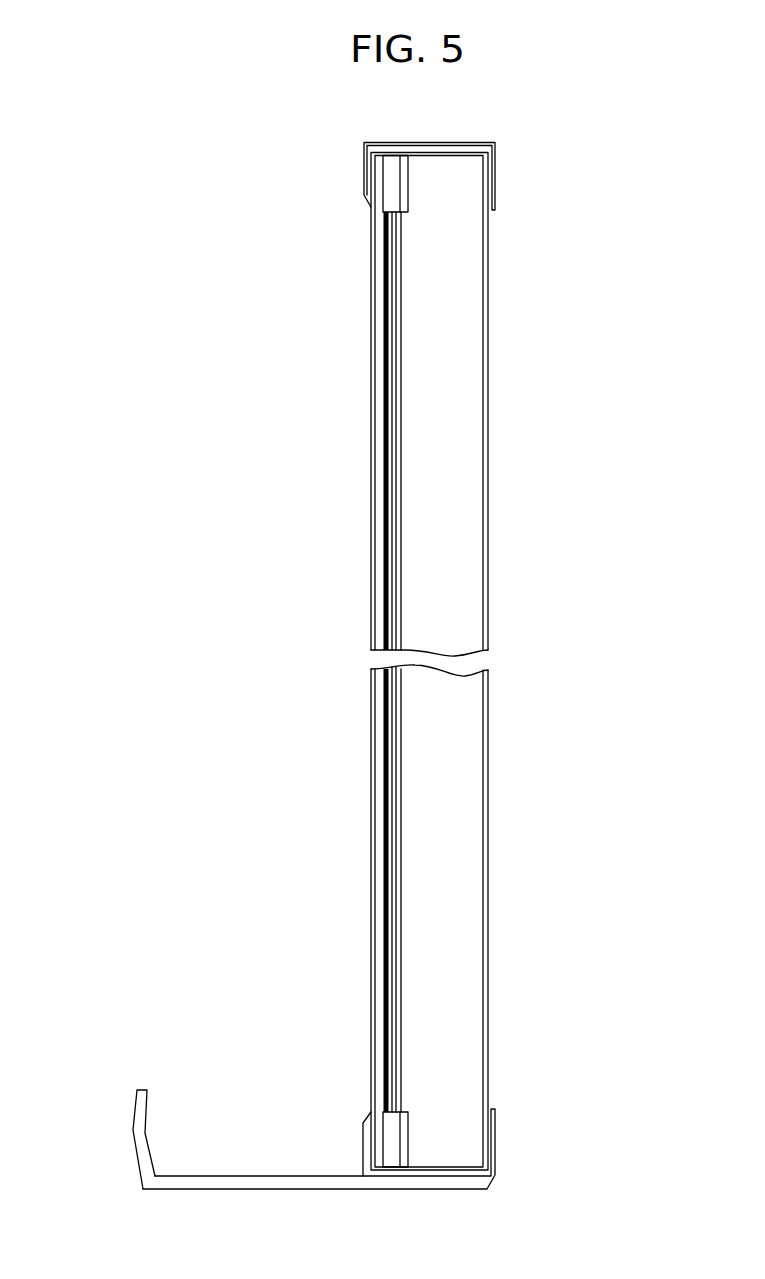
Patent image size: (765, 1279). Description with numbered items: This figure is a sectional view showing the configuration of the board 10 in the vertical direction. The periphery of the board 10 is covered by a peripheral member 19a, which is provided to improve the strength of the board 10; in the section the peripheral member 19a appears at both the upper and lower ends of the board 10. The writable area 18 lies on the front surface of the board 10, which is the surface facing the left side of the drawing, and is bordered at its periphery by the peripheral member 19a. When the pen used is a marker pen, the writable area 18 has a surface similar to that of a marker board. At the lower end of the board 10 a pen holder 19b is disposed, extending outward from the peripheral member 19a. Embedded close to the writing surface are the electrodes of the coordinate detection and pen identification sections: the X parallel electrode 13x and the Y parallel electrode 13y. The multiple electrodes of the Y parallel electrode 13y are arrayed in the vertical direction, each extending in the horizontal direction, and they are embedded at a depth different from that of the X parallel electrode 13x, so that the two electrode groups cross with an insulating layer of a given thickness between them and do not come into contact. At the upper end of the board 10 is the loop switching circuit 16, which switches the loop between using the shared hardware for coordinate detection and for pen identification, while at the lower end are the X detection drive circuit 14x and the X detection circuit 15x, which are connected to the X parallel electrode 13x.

The board 10 is at (595, 145).
The X parallel electrode 13x is at (383, 432).
The Y parallel electrode 13y is at (385, 483).
The X detection drive circuit 14x is at (409, 1128).
The X detection circuit 15x is at (495, 1109).
The loop switching circuit 16 is at (410, 168).
The writable area 18 is at (371, 303).
The peripheral member 19a is at (364, 168).
The pen holder 19b is at (135, 1117).